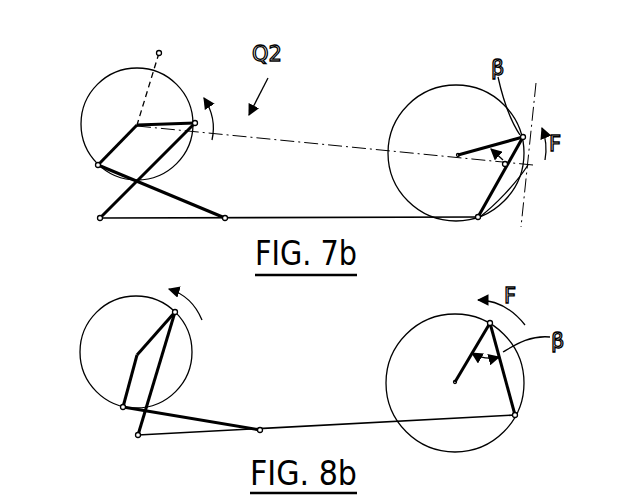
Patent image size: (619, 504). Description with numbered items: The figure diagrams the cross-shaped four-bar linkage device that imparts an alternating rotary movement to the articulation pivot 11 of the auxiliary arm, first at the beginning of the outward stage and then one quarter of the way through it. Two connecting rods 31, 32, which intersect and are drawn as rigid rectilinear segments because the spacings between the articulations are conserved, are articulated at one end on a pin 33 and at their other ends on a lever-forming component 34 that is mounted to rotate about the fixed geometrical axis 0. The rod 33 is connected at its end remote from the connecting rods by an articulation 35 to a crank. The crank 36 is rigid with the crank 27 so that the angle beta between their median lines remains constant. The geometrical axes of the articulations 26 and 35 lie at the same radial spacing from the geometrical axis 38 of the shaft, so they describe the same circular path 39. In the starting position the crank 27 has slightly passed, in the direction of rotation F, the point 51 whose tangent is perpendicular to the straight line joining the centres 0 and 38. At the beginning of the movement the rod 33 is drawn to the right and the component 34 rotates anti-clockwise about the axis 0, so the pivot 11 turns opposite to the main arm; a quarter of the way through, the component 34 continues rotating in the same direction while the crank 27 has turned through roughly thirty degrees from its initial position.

In FIG. 7B, the fixed geometrical axis 0 is at (133, 123).
In FIG. 8B, the fixed geometrical axis 0 is at (135, 353).
In FIG. 7B, the articulation pivot 11 is at (163, 53).
In FIG. 7B, the articulation 26 is at (528, 133).
In FIG. 7B, the crank 27 is at (470, 150).
In FIG. 8B, the crank 27 is at (465, 363).
In FIG. 7B, the connecting rod 31 is at (115, 202).
In FIG. 8B, the connecting rod 31 is at (162, 345).
In FIG. 7B, the connecting rod 32 is at (182, 203).
In FIG. 8B, the connecting rod 32 is at (237, 398).
In FIG. 7B, the rod 33 is at (317, 217).
In FIG. 8B, the rod 33 is at (292, 427).
In FIG. 7B, the component 34 is at (112, 147).
In FIG. 8B, the component 34 is at (127, 377).
In FIG. 7B, the articulation 35 is at (482, 222).
In FIG. 8B, the articulation 35 is at (517, 417).
In FIG. 7B, the crank 36 is at (497, 186).
In FIG. 8B, the crank 36 is at (510, 380).
In FIG. 7B, the geometrical axis 38 is at (456, 153).
In FIG. 8B, the geometrical axis 38 is at (455, 380).
In FIG. 7B, the circular path 39 is at (390, 130).
In FIG. 8B, the circular path 39 is at (386, 380).
In FIG. 7B, the point 51 is at (528, 165).